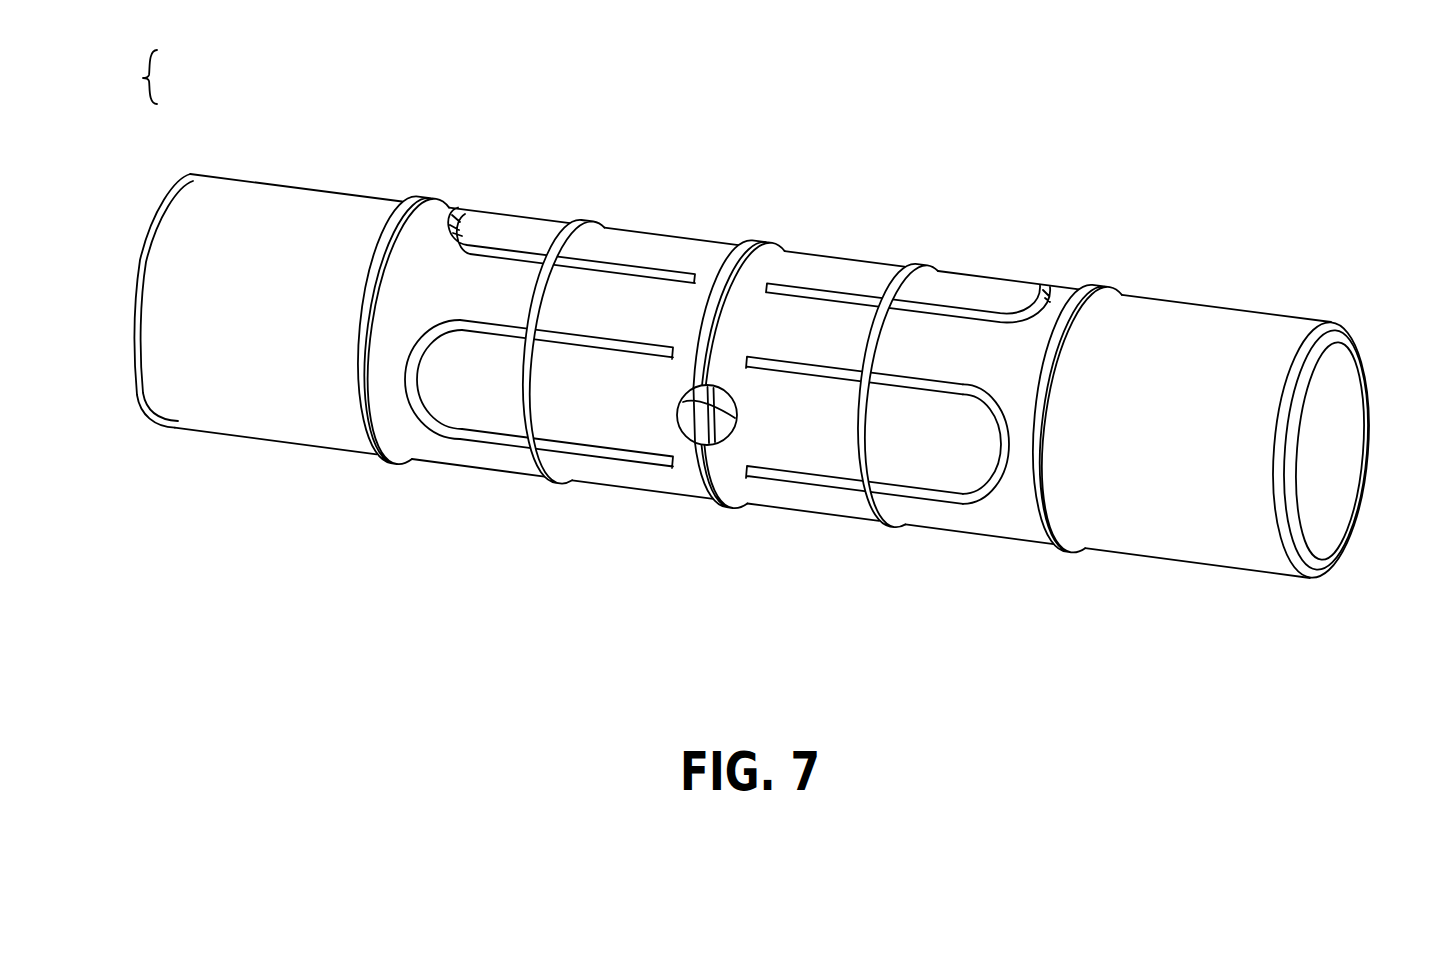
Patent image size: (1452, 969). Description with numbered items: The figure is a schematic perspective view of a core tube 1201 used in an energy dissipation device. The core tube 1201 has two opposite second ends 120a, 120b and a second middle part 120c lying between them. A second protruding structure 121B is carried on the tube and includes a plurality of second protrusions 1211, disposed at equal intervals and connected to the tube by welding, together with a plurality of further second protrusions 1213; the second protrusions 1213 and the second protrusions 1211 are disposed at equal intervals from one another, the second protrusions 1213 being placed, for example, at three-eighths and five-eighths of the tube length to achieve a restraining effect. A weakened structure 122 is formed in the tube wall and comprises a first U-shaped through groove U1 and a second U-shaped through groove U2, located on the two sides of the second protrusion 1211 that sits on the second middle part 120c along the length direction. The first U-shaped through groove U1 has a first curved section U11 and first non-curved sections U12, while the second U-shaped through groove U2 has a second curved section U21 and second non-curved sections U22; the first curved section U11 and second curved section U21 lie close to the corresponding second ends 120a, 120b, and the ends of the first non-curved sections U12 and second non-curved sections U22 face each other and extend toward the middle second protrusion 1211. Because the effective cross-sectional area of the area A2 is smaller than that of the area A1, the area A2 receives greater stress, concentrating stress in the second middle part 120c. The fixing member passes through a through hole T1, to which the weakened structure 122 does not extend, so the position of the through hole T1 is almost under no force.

The second end 120a is at (1372, 387).
The second end 120b is at (136, 258).
The second middle part 120c is at (1085, 251).
The core tube 1201 is at (1218, 306).
The second protrusion 1211 is at (377, 462).
The second protrusion 1213 is at (589, 215).
The second protruding structure 121B is at (121, 76).
The weakened structure 122 is at (775, 408).
The first U-shaped through groove U1 is at (938, 440).
The first curved section U11 is at (964, 496).
The first non-curved sections U12 is at (803, 478).
The second U-shaped through groove U2 is at (550, 369).
The second curved section U21 is at (433, 431).
The second non-curved sections U22 is at (500, 437).
The through hole T1 is at (720, 414).
The area A1 is at (333, 344).
The area A2 is at (503, 292).